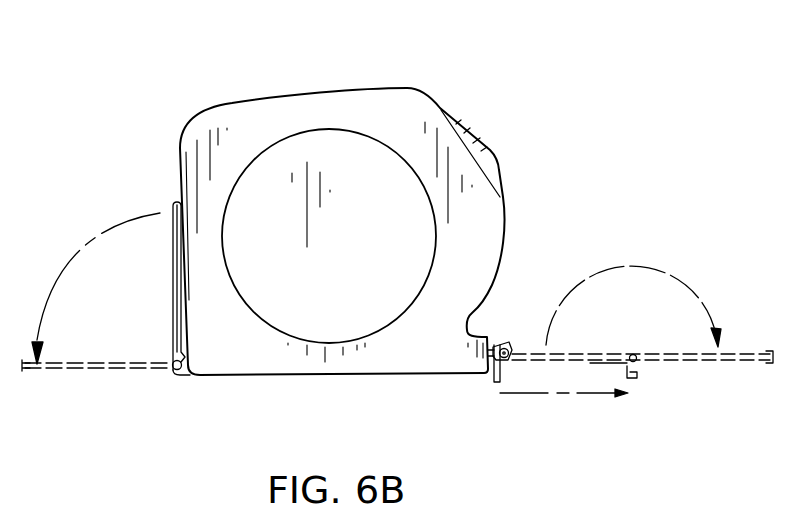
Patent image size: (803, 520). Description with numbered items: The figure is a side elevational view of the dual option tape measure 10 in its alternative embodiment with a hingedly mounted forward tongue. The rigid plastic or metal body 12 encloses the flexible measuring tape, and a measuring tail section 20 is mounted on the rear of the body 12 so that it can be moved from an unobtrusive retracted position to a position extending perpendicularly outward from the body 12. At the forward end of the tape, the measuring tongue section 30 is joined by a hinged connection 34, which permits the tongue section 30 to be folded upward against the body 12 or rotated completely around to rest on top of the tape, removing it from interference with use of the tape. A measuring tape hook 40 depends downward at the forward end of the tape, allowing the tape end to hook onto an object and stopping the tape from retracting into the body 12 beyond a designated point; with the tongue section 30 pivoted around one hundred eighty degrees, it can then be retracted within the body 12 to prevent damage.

The dual option tape measure 10 is at (258, 93).
The body 12 is at (390, 104).
The measuring tail section 20 is at (173, 247).
The measuring tongue section 30 is at (498, 333).
The hinged connection 34 is at (513, 343).
The measuring tape hook 40 is at (493, 383).